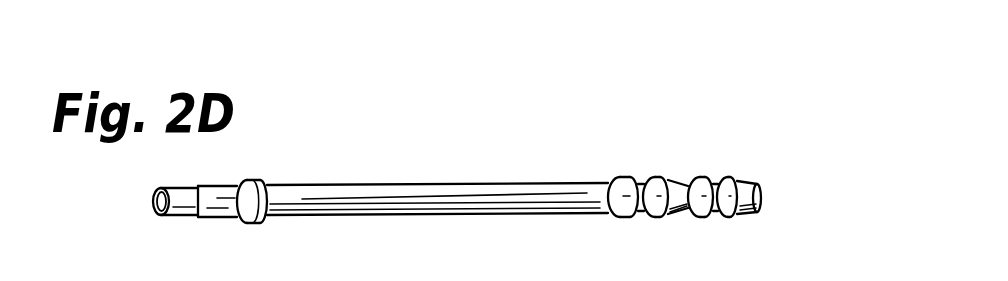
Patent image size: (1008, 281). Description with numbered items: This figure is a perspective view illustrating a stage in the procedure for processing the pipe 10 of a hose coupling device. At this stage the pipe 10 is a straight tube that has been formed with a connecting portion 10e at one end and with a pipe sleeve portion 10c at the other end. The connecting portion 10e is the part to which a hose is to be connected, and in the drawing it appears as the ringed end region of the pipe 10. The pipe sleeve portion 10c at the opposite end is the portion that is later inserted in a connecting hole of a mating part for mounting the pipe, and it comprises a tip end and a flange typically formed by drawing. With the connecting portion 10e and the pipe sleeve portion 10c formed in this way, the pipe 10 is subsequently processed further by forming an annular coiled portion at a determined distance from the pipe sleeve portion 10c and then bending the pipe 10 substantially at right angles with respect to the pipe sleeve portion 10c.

The pipe 10 is at (300, 185).
The pipe sleeve portion 10c is at (223, 218).
The connecting portion 10e is at (667, 178).